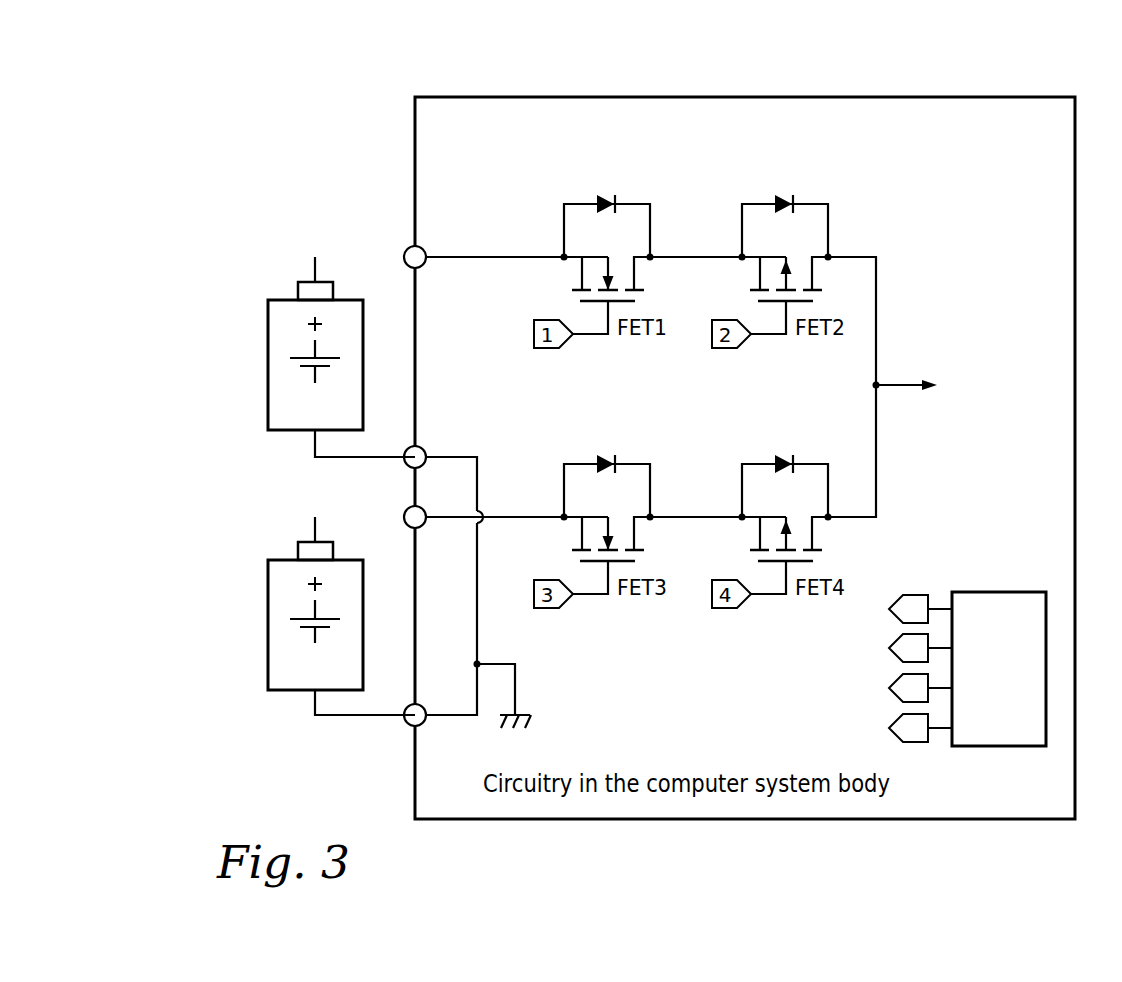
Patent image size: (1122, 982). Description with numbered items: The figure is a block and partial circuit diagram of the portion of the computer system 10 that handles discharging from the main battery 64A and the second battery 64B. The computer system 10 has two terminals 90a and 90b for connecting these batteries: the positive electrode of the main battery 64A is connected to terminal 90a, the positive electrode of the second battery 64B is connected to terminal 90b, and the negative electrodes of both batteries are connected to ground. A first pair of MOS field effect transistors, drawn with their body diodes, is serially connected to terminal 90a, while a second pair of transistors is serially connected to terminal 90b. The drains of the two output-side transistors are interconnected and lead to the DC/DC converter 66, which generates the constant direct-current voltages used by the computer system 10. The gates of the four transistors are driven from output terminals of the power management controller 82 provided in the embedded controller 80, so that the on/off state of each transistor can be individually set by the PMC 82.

The computer system 10 is at (1022, 97).
The main battery 64A is at (268, 355).
The second battery 64B is at (268, 615).
The DC/DC converter 66 is at (948, 418).
The embedded controller 80 is at (947, 558).
The power management controller (PMC) 82 is at (1000, 592).
The terminal 90a is at (410, 247).
The terminal 90b is at (409, 508).